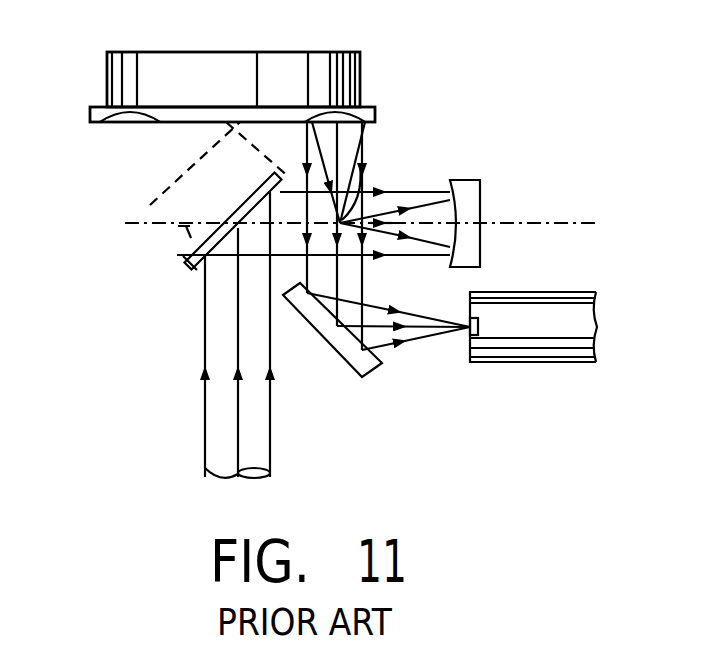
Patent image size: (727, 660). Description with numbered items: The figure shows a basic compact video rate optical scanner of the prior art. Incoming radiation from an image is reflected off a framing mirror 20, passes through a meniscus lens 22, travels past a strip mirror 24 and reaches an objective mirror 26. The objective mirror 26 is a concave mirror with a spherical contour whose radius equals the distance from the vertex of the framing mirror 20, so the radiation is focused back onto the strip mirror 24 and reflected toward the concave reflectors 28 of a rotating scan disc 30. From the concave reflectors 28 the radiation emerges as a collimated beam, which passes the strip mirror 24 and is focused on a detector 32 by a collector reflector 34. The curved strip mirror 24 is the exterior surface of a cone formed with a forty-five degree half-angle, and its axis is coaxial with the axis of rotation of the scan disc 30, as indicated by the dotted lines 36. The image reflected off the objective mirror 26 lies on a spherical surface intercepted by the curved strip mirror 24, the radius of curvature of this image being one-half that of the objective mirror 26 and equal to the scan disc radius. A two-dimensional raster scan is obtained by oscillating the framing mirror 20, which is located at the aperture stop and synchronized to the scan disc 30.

The framing mirror 20 is at (190, 258).
The meniscus lens 22 is at (292, 258).
The strip mirror 24 is at (358, 190).
The objective mirror 26 is at (480, 190).
The concave reflectors 28 is at (122, 120).
The rotating scan disc 30 is at (375, 107).
The detector 32 is at (530, 340).
The collector reflector 34 is at (372, 366).
The dotted lines 36 is at (172, 186).